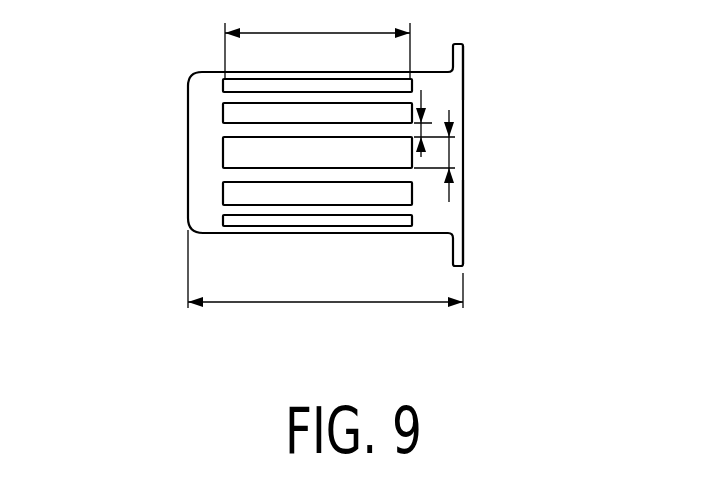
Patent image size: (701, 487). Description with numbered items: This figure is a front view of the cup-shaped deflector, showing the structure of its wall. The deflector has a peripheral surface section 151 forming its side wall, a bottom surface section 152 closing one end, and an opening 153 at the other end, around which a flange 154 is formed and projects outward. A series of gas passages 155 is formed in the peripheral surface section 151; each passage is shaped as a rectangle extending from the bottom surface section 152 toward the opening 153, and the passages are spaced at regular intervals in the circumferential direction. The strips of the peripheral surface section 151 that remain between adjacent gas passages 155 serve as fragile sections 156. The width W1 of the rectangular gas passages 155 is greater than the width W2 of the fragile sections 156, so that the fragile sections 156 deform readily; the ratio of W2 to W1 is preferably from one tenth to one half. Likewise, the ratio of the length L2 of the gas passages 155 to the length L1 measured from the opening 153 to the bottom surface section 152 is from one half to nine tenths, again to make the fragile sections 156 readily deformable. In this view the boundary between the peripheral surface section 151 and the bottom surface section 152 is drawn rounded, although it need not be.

The peripheral surface section 151 is at (203, 218).
The bottom surface section 152 is at (187, 177).
The opening 153 is at (463, 213).
The flange 154 is at (463, 45).
The gas passages 155 is at (242, 153).
The fragile sections 156 is at (247, 98).
The length from the opening to the bottom surface section L1 is at (325, 281).
The length of the gas passages L2 is at (317, 42).
The width of the rectangular gas passages W1 is at (452, 152).
The width of the fragile sections W2 is at (425, 123).